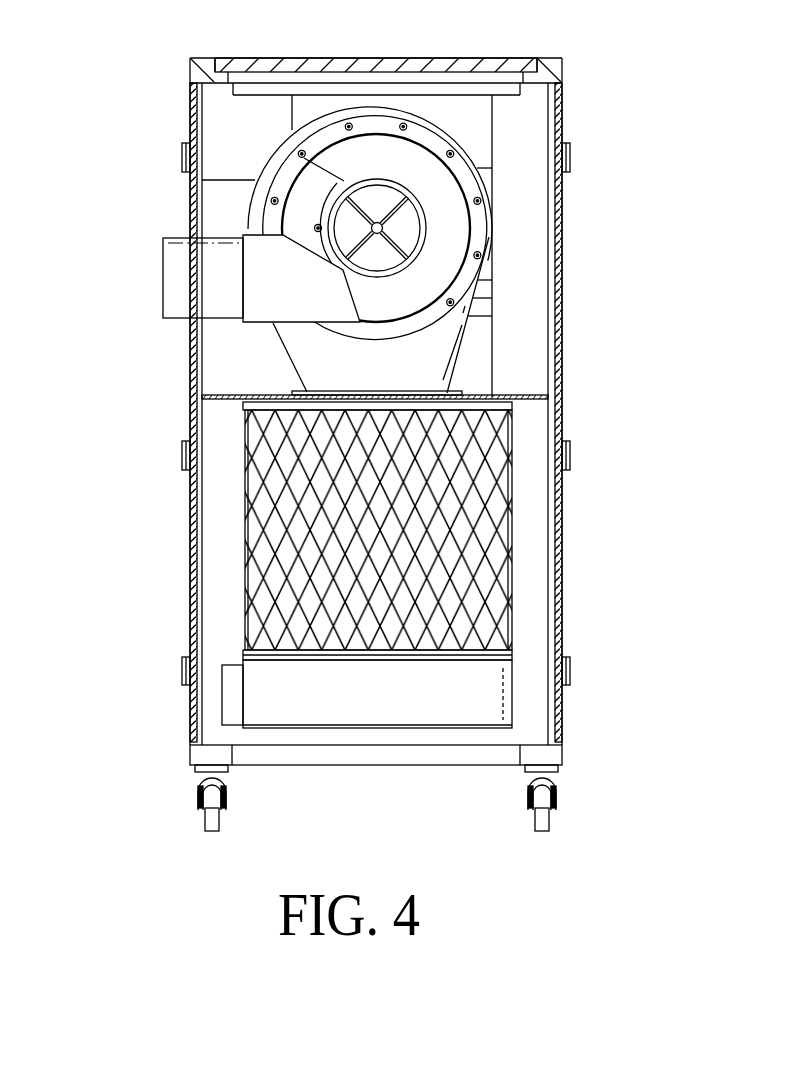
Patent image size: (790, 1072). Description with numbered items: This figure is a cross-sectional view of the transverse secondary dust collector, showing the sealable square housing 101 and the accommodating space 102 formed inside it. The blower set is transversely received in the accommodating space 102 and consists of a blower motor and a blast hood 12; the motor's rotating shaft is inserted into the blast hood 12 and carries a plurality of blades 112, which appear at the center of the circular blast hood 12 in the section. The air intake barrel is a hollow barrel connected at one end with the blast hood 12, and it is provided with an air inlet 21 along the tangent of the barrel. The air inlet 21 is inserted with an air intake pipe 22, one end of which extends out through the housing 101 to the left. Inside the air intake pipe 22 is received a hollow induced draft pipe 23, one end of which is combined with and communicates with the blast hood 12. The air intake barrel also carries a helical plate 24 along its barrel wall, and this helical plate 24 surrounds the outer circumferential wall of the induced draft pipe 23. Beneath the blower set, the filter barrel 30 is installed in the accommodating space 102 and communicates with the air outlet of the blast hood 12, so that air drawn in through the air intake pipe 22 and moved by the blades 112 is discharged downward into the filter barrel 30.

The housing 101 is at (565, 108).
The accommodating space 102 is at (223, 118).
The blast hood 12 is at (447, 340).
The blades 112 is at (410, 242).
The air inlet 21 is at (240, 292).
The air intake pipe 22 is at (173, 261).
The induced draft pipe 23 is at (396, 180).
The helical plate 24 is at (462, 214).
The filter barrel 30 is at (535, 497).